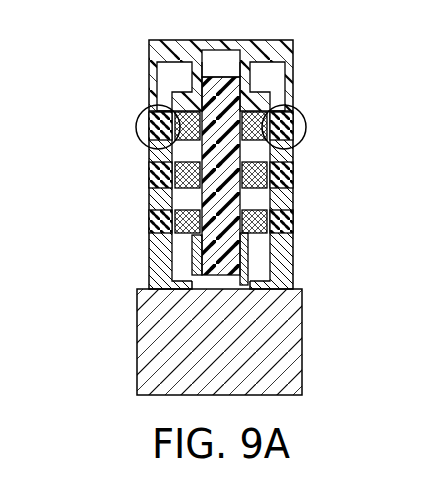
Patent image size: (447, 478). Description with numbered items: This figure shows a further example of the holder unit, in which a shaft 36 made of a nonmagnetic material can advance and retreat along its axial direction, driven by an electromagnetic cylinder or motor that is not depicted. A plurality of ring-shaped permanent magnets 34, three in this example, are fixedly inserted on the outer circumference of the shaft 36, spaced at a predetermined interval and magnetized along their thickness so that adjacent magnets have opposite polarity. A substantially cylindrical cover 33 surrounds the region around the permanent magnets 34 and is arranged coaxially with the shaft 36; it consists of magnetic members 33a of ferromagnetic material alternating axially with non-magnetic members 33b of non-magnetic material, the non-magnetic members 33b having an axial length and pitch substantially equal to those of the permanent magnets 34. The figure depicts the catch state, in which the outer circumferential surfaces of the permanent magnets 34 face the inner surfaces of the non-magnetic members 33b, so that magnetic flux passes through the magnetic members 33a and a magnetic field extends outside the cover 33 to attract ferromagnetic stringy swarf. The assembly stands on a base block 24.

The base block 24 is at (290, 354).
The cover 33 is at (75, 172).
The magnetic members 33a is at (150, 193).
The non-magnetic members 33b is at (150, 217).
The permanent magnets 34 is at (290, 213).
The shaft 36 is at (245, 253).